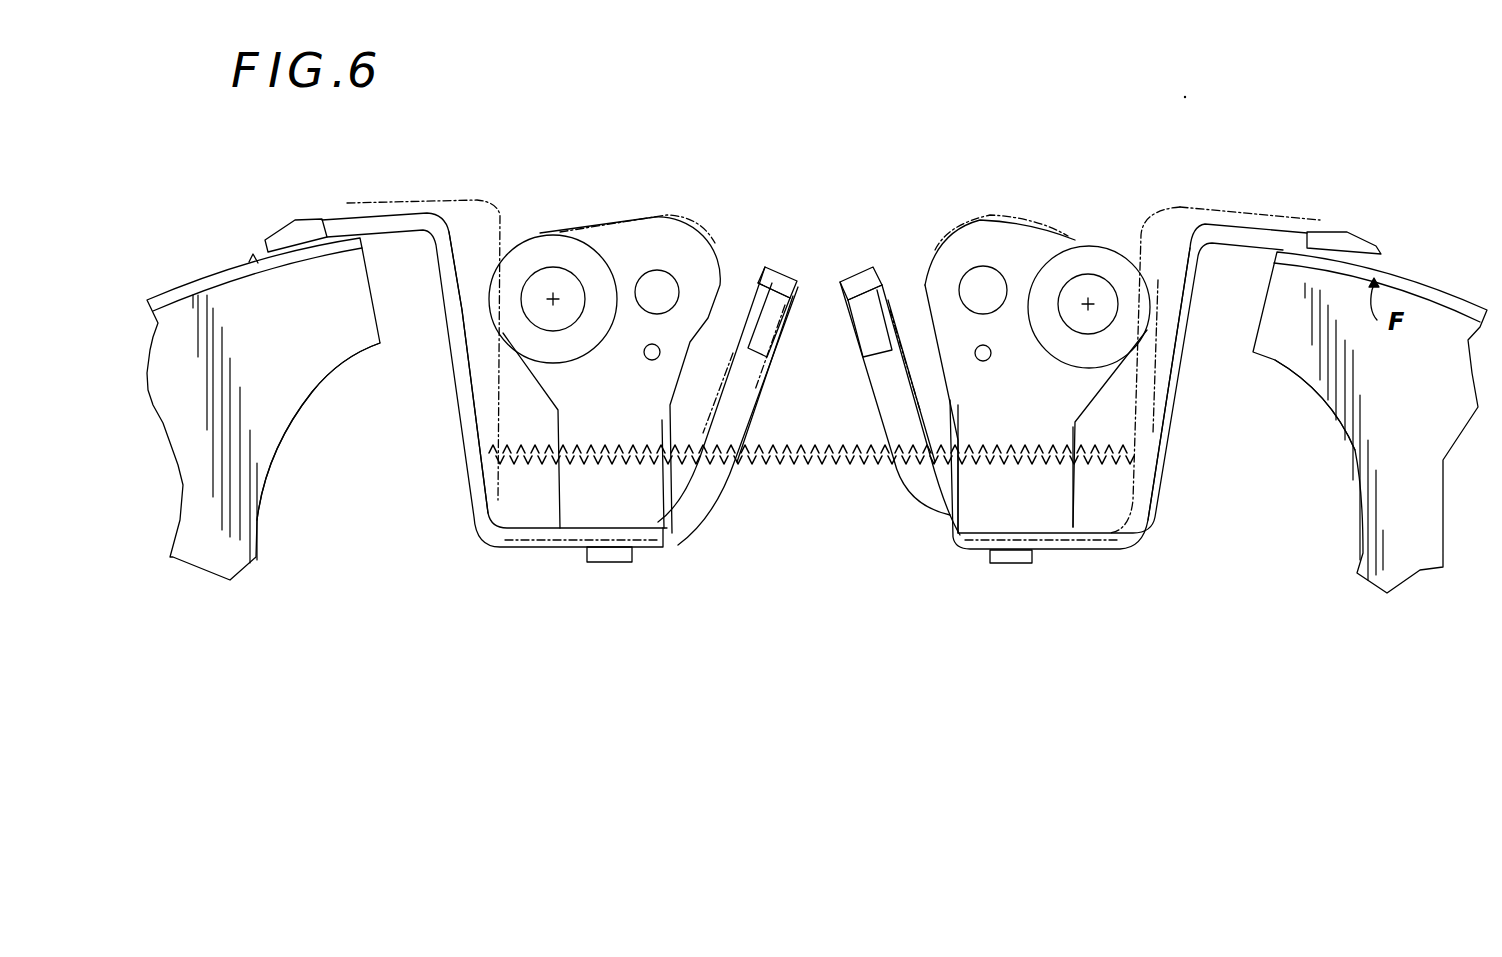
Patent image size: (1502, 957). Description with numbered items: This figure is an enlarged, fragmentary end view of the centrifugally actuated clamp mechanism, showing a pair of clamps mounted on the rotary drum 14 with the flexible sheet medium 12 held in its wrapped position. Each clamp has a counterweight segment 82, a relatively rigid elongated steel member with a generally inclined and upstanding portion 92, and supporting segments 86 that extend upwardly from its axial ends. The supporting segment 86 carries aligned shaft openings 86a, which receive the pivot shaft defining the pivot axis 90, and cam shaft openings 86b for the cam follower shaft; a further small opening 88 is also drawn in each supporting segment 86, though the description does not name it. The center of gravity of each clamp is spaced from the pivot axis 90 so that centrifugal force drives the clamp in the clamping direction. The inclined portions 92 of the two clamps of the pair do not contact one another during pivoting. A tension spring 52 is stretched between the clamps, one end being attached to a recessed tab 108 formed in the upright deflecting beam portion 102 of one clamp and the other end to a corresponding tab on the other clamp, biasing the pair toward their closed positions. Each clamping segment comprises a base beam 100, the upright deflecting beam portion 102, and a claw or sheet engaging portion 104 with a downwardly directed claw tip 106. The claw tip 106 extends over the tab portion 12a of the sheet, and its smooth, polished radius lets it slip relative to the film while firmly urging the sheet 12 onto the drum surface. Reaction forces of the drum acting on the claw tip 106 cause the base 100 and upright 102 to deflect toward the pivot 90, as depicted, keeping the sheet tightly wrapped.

The flexible sheet medium 12 is at (231, 268).
The tab portion of the sheet 12a is at (1378, 270).
The rotary drum 14 is at (256, 430).
The tension spring 52 is at (810, 468).
The counterweight segment 82 is at (849, 262).
The supporting segment 86 is at (978, 222).
The shaft openings 86a is at (558, 270).
The cam shaft openings 86b is at (664, 276).
The pin hole 88 is at (652, 361).
The pivot axis 90 is at (1081, 316).
The inclined upstanding portion 92 is at (702, 488).
The base beam 100 is at (1112, 556).
The upright deflecting beam portion 102 is at (452, 350).
The claw or sheet engaging portion 104 is at (465, 205).
The claw tip 106 is at (346, 212).
The recessed tab 108 is at (1123, 492).